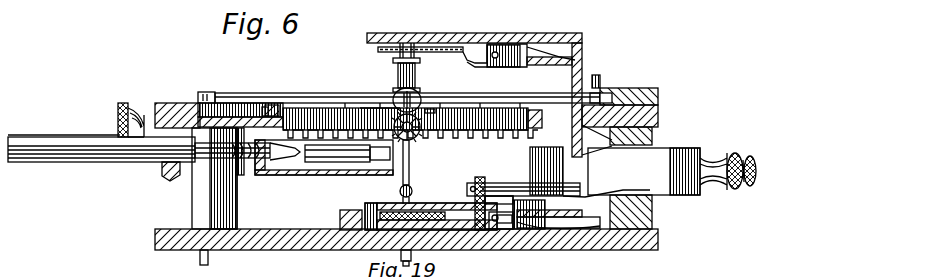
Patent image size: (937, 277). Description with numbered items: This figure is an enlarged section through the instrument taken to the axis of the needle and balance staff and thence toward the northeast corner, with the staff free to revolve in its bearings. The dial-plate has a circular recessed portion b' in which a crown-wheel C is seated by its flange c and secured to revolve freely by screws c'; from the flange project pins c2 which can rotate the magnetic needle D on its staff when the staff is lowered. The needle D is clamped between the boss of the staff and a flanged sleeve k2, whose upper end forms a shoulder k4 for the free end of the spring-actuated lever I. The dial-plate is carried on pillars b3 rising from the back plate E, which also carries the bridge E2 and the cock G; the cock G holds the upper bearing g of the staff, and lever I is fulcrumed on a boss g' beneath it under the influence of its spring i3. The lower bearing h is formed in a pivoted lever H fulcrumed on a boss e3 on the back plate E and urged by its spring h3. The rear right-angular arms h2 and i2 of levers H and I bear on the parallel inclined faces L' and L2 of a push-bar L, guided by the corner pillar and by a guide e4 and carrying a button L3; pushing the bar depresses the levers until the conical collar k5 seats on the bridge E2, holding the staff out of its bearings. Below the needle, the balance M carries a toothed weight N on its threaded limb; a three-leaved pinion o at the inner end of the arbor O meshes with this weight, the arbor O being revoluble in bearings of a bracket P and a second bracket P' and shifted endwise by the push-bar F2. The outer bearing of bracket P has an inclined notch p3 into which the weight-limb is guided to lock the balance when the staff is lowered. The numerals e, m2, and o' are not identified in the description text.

The back plate E is at (155, 240).
The pin e is at (208, 260).
The push-bar F2 is at (101, 132).
The arbor O is at (141, 180).
The second bracket P' is at (165, 182).
The pillars b3 is at (668, 218).
The circular recessed portion b' is at (185, 103).
The flange c is at (375, 109).
The screws c' is at (263, 93).
The notch p3 is at (302, 117).
The crown-wheel C is at (410, 121).
The stop m2 is at (440, 110).
The cock G is at (620, 94).
The spring-actuated lever I is at (447, 44).
The spring i3 is at (560, 50).
The right-angular arm i2 is at (580, 111).
The bearing g is at (420, 33).
The boss g' is at (519, 40).
The bearing or shoulder k4 is at (393, 61).
The flanged sleeve k2 is at (415, 86).
The magnetic needle D is at (435, 80).
The pins c2 is at (392, 112).
The balance M is at (415, 127).
The weight N is at (410, 150).
The collar or sleeve k5 is at (412, 190).
The bridge E2 is at (422, 215).
The bracket P is at (324, 171).
The pinion o is at (363, 169).
The spring coupling o' is at (247, 157).
The pivoted lever H is at (523, 206).
The guide e4 is at (480, 183).
The boss e3 is at (510, 232).
The bearing h is at (476, 194).
The right-angular arm h2 is at (558, 214).
The spring h3 is at (556, 230).
The inclined face L2 is at (559, 171).
The inclined face L' is at (606, 186).
The push-bar L is at (644, 171).
The button L3 is at (740, 152).